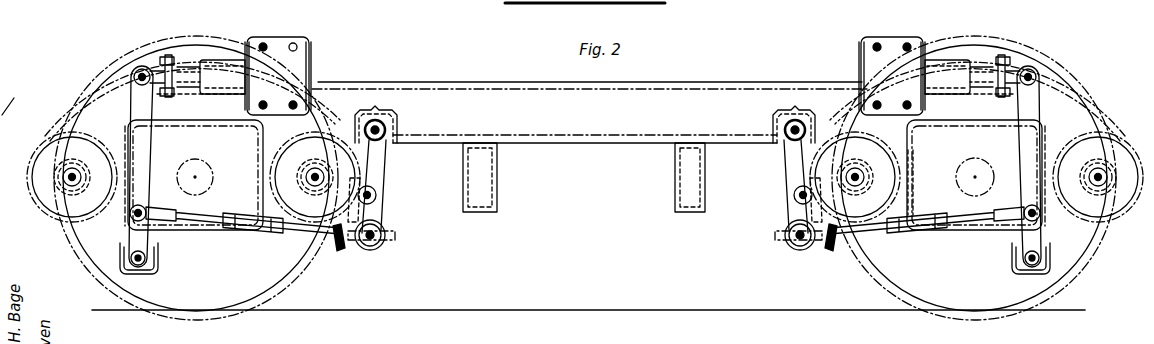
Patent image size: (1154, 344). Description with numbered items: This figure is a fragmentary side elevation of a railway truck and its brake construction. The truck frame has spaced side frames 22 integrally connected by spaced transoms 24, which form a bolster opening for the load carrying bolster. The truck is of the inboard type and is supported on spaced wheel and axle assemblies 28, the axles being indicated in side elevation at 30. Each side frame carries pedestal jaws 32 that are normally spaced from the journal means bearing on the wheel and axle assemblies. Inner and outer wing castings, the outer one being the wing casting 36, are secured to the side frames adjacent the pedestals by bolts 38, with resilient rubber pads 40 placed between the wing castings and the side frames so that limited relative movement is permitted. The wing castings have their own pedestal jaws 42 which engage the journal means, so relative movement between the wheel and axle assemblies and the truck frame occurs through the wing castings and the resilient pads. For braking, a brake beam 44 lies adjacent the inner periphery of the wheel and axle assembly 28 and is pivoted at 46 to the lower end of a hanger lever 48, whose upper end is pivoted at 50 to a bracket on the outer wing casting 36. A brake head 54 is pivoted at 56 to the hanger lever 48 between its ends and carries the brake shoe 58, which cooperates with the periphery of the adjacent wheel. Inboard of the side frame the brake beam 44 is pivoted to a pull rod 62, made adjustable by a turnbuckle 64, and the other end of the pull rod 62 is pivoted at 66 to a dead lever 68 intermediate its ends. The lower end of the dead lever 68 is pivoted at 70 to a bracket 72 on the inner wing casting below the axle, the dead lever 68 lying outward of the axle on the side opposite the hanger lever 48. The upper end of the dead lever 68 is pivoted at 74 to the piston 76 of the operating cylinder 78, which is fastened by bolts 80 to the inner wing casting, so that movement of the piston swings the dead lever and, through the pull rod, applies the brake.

The side frame 22 is at (660, 88).
The transom 24 is at (499, 167).
The wheel and axle assembly 28 is at (253, 288).
The axle 30 is at (974, 158).
The pedestal jaw 32 is at (258, 150).
The outer wing casting 36 is at (372, 110).
The bolt 38 is at (150, 150).
The resilient pad 40 is at (50, 142).
The pedestal jaw 42 is at (1018, 150).
The brake beam 44 is at (396, 236).
The pivotal connection 46 is at (383, 232).
The hanger lever 48 is at (390, 146).
The pivotal connection 50 is at (388, 121).
The brake head 54 is at (355, 217).
The pivotal connection 56 is at (377, 190).
The brake shoe 58 is at (340, 250).
The pull rod 62 is at (298, 236).
The turnbuckle 64 is at (252, 232).
The pivotal connection 66 is at (146, 208).
The dead lever 68 is at (150, 232).
The pivotal connection 70 is at (146, 258).
The bracket 72 is at (158, 268).
The pivotal connection 74 is at (142, 68).
The piston 76 is at (188, 60).
The operating cylinder 78 is at (283, 40).
The bolt 80 is at (261, 43).